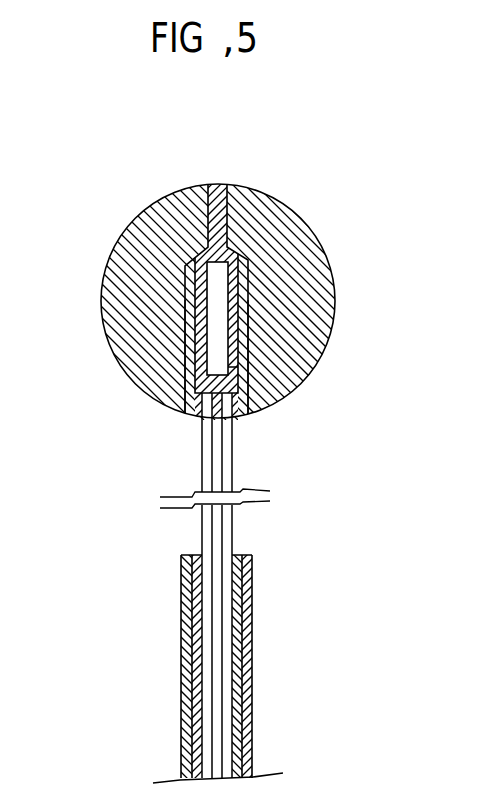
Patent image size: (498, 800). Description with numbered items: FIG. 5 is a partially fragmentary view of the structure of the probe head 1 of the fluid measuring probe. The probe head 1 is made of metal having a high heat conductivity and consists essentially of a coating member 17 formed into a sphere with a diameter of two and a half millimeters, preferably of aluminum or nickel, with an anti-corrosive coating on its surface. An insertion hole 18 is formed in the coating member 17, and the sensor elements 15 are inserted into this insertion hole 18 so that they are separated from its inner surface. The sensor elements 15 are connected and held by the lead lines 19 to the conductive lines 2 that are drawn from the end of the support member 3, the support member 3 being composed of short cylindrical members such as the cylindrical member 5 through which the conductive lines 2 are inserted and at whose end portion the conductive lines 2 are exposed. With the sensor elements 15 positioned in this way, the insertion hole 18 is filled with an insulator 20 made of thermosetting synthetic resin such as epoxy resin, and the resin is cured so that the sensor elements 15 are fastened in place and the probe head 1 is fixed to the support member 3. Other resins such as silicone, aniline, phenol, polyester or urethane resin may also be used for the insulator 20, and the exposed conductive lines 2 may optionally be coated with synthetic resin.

The probe head 1 is at (324, 245).
The coating member 17 is at (336, 292).
The insulator 20 is at (248, 258).
The insertion hole 18 is at (188, 318).
The sensor elements 15 is at (226, 330).
The lead lines 19 is at (158, 396).
The conductive lines 2 is at (228, 472).
The cylindrical member 5 is at (238, 666).
The support member 3 is at (247, 653).